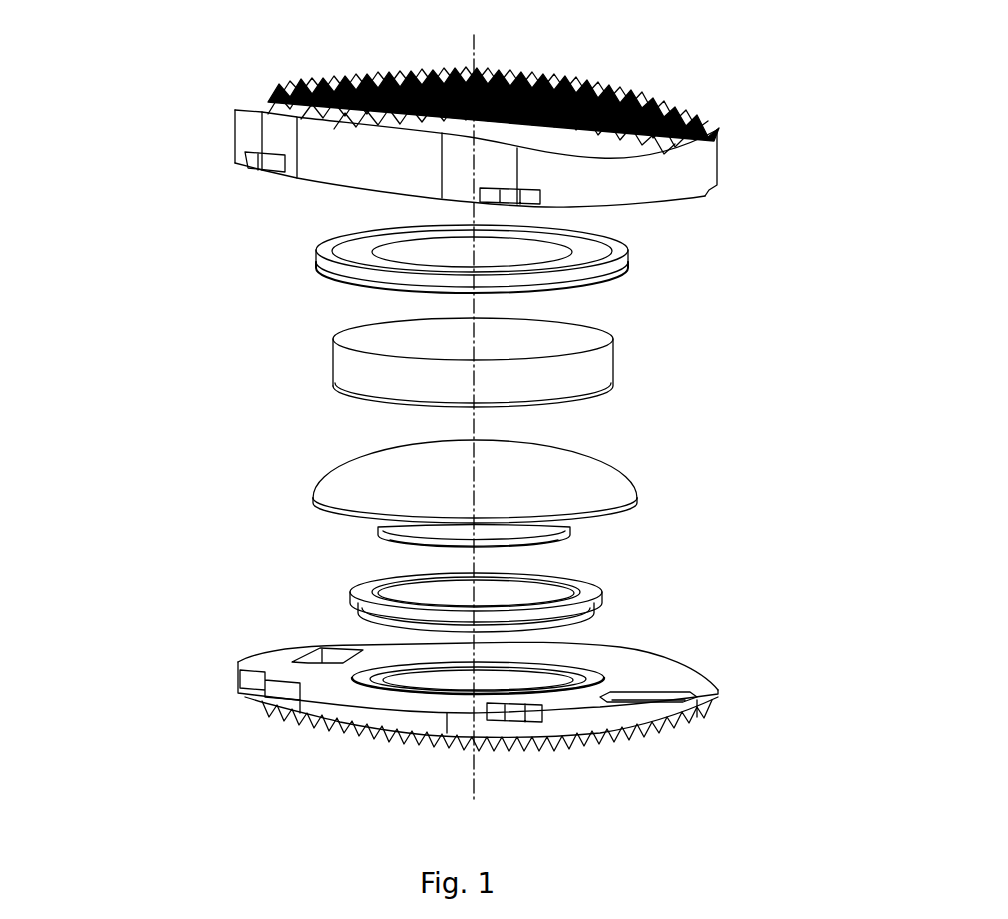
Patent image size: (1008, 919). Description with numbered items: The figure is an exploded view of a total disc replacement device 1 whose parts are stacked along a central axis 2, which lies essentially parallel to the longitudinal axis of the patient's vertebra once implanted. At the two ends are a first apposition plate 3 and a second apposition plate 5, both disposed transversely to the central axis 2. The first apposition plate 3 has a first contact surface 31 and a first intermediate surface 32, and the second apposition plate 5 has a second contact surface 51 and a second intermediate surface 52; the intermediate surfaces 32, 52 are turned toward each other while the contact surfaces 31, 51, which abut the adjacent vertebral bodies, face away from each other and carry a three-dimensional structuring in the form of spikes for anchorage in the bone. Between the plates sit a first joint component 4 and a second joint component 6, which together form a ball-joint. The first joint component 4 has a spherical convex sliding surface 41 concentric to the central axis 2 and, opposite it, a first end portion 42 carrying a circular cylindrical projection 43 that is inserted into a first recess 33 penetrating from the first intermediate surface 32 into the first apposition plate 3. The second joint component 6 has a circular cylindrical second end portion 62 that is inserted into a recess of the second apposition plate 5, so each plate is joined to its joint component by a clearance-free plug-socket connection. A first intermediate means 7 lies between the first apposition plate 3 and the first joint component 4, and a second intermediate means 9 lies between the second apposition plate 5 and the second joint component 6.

The total disc replacement device 1 is at (729, 93).
The central axis 2 is at (478, 778).
The first apposition plate 3 is at (655, 682).
The first contact surface 31 is at (327, 728).
The first intermediate surface 32 is at (280, 658).
The first recess 33 is at (565, 683).
The first joint component 4 is at (543, 478).
The spherical convex sliding surface 41 is at (328, 490).
The first end portion 42 is at (563, 535).
The circular cylindrical projection 43 is at (362, 533).
The second apposition plate 5 is at (678, 173).
The second contact surface 51 is at (270, 88).
The second intermediate surface 52 is at (300, 196).
The second joint component 6 is at (588, 377).
The second end portion 62 is at (322, 368).
The first intermediate means 7 is at (602, 603).
The second intermediate means 9 is at (600, 263).